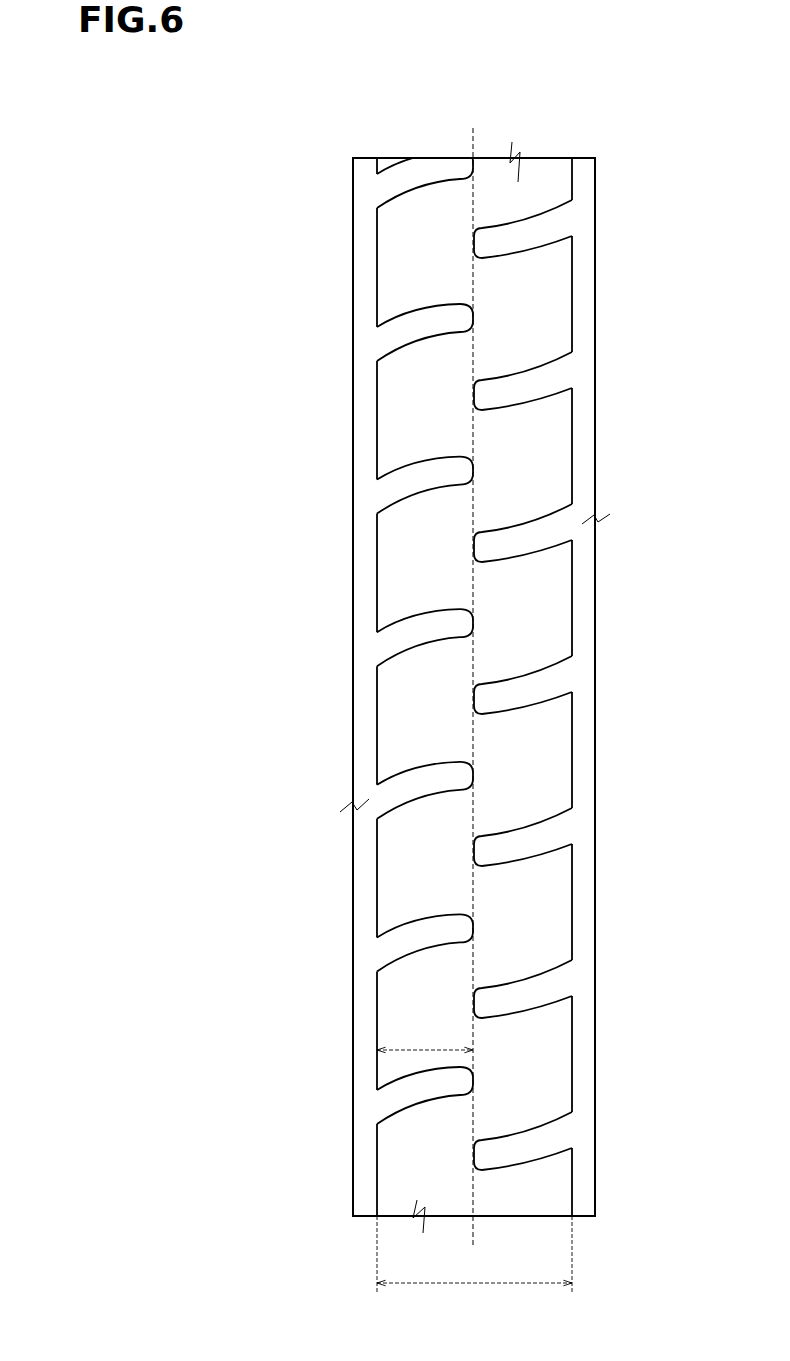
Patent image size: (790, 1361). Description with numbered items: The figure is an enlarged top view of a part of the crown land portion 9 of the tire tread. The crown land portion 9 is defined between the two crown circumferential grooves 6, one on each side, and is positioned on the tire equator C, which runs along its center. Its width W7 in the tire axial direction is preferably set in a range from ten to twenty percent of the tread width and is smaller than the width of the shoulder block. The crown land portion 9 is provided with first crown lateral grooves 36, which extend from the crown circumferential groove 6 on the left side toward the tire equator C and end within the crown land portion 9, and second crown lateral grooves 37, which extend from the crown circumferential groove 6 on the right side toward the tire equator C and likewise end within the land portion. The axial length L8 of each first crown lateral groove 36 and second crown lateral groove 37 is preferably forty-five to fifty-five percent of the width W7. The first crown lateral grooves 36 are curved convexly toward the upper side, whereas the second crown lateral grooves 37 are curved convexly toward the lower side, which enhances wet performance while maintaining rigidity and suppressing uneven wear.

The crown circumferential groove 6 is at (366, 232).
The crown land portion 9 is at (440, 227).
The tire equator C is at (472, 673).
The first crown lateral groove 36 is at (425, 329).
The second crown lateral groove 37 is at (520, 388).
The axial length of crown lateral groove L8 is at (422, 1046).
The width of crown land portion W7 is at (474, 1265).